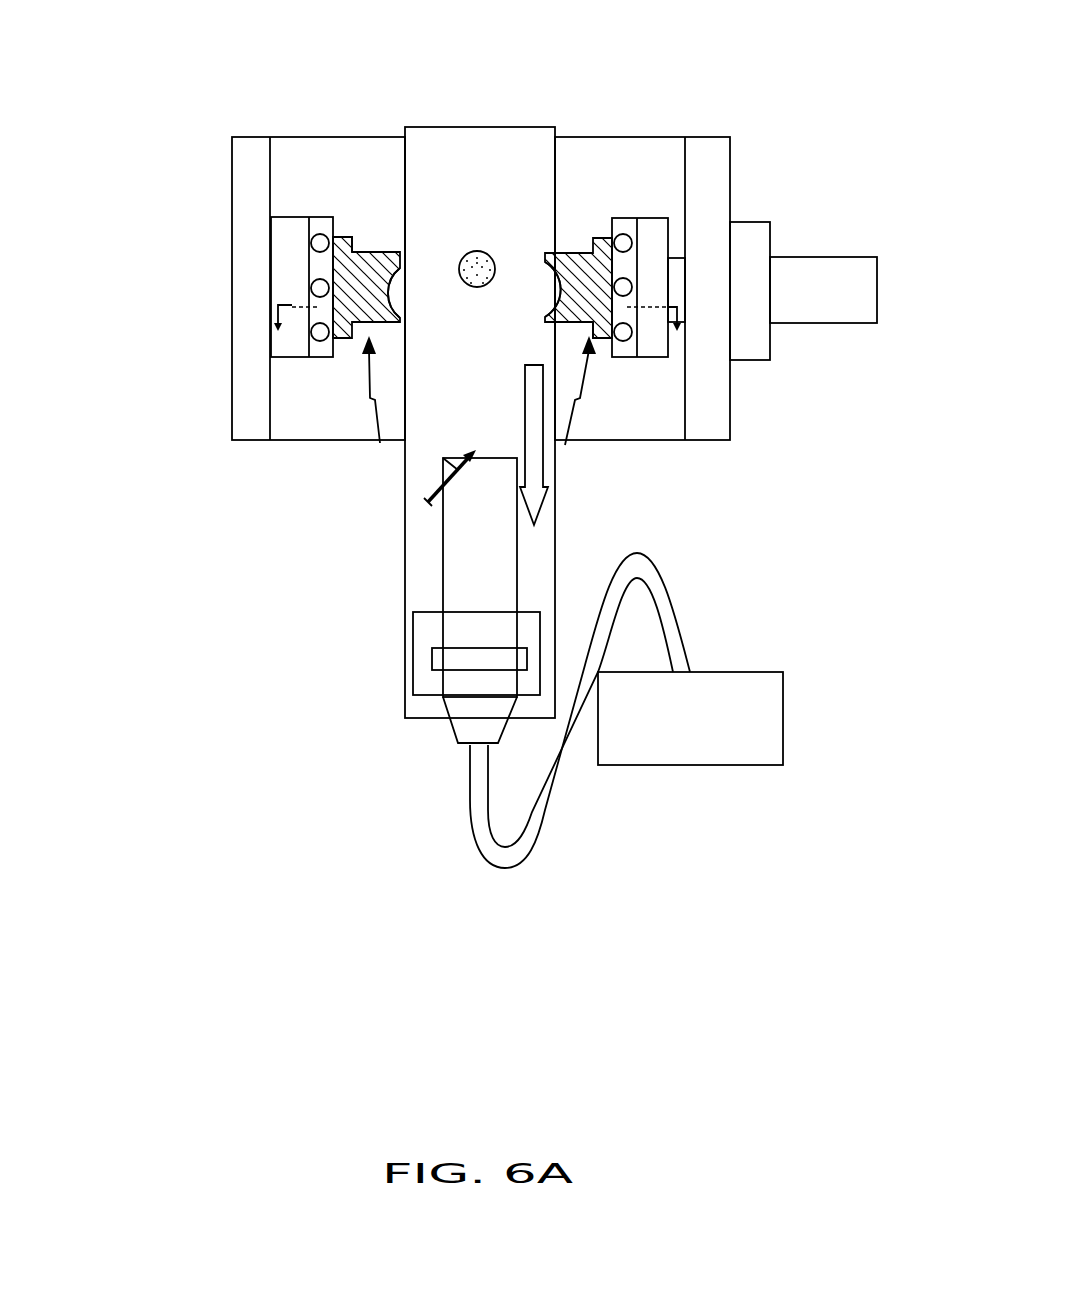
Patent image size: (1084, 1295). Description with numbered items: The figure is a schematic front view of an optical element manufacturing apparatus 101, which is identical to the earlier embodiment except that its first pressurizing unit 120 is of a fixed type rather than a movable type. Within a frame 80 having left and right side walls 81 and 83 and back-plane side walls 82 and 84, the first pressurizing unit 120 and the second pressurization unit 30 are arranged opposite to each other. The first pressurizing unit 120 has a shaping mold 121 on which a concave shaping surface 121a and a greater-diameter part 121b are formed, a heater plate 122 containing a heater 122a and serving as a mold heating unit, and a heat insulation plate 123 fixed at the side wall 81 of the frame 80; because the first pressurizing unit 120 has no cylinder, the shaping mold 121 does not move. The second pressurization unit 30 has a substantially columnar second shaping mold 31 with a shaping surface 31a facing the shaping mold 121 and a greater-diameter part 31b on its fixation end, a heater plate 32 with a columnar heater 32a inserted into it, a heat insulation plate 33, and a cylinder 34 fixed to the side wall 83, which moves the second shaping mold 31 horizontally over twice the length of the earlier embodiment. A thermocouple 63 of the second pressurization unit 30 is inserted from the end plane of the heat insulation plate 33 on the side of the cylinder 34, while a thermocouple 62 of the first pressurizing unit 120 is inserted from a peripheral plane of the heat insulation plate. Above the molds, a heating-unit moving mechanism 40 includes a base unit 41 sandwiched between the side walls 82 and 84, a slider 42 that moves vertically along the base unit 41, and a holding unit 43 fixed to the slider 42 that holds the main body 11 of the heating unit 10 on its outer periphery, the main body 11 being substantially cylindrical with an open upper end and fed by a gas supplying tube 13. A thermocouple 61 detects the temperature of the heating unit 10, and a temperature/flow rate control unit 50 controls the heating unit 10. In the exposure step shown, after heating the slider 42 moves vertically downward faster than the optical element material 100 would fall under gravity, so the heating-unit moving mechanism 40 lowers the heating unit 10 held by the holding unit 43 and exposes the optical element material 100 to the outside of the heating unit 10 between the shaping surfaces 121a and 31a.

The optical element manufacturing apparatus 101 is at (158, 143).
The optical element material 100 is at (483, 251).
The shaping mold 121 is at (370, 250).
The shaping surface 121a is at (407, 278).
The greater-diameter part 121b is at (333, 237).
The heater plate 122 is at (323, 357).
The heater 122a is at (317, 233).
The heat insulation plate 123 is at (287, 358).
The first pressurizing unit 120 is at (378, 404).
The thermocouple 62 is at (292, 305).
The side wall 81 is at (247, 418).
The side wall 82 is at (278, 425).
The frame 80 is at (733, 197).
The side wall 83 is at (720, 167).
The side wall 84 is at (675, 150).
The cylinder 34 is at (845, 325).
The heat insulation plate 33 is at (652, 218).
The heater plate 32 is at (620, 218).
The columnar heater 32a is at (628, 337).
The second shaping mold 31 is at (575, 252).
The shaping surface 31a is at (544, 282).
The greater-diameter part 31b is at (605, 338).
The thermocouple 63 is at (648, 312).
The second pressurization unit 30 is at (578, 408).
The heating-unit moving mechanism 40 is at (398, 580).
The base unit 41 is at (422, 712).
The main body 11 is at (450, 567).
The slider 42 is at (415, 633).
The holding unit 43 is at (435, 662).
The thermocouple 61 is at (447, 465).
The heating unit 10 is at (530, 562).
The gas supplying tube 13 is at (660, 603).
The temperature/flow rate control unit 50 is at (683, 767).